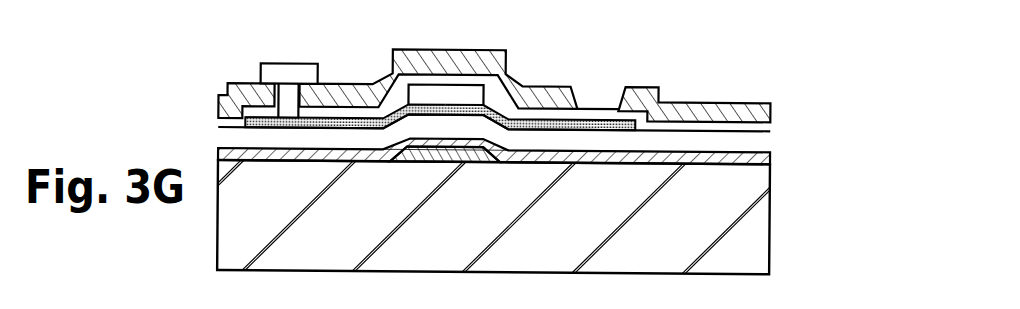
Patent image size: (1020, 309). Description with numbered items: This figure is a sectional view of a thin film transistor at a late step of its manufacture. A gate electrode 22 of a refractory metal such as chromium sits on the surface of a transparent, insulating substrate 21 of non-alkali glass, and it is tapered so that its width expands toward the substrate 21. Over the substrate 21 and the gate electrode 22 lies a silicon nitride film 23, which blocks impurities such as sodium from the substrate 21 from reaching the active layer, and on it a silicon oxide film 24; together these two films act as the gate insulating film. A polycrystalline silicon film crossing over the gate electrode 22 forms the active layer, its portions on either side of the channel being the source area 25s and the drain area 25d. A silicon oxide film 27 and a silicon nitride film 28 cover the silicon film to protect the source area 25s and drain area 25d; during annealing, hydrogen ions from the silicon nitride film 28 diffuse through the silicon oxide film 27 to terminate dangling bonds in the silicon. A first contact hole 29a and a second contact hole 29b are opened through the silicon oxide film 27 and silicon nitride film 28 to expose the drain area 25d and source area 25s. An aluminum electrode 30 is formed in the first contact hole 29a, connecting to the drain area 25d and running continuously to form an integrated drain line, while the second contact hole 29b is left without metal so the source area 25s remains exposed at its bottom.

The transparent substrate 21 is at (757, 256).
The gate electrode 22 is at (468, 159).
The silicon nitride film 23 is at (765, 163).
The silicon oxide film 24 is at (765, 147).
The drain area 25d is at (368, 122).
The source area 25s is at (541, 125).
The silicon oxide film 27 is at (765, 128).
The silicon nitride film 28 is at (760, 105).
The first contact hole 29a is at (277, 63).
The second contact hole 29b is at (578, 110).
The electrode 30 is at (308, 63).